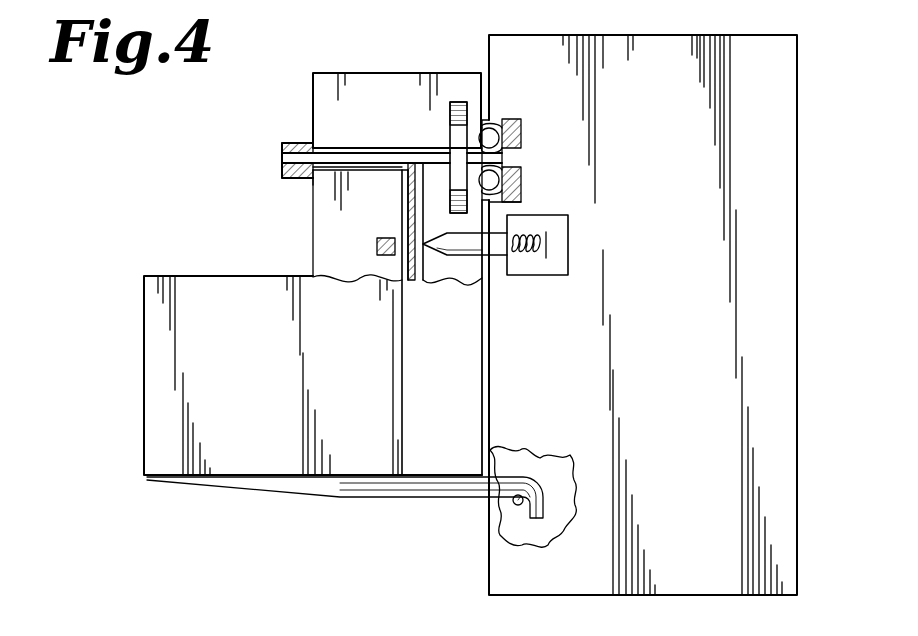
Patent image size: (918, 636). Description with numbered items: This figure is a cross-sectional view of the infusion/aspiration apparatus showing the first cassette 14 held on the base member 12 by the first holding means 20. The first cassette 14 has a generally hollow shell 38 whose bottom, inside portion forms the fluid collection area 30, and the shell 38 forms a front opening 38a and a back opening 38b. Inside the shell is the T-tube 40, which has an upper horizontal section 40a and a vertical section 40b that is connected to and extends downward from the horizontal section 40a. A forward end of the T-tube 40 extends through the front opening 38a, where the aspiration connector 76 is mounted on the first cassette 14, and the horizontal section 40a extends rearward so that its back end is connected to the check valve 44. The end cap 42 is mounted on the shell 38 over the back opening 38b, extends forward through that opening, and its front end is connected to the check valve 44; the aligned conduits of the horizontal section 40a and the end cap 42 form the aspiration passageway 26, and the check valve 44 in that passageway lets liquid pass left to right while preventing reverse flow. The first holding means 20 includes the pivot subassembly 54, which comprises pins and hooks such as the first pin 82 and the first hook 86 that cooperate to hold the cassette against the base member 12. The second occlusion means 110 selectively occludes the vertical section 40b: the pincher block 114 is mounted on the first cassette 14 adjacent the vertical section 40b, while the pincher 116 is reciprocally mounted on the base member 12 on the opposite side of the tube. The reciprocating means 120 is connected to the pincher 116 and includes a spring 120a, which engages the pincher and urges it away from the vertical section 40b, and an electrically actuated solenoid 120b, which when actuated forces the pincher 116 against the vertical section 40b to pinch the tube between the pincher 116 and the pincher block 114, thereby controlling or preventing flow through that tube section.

The base member 12 is at (787, 107).
The first cassette 14 is at (200, 222).
The first holding means 20 is at (410, 552).
The aspiration passageway 26 is at (335, 143).
The fluid collection area 30 is at (392, 447).
The shell 38 is at (144, 327).
The front opening 38a is at (316, 178).
The back opening 38b is at (492, 126).
The T-tube 40 is at (392, 186).
The upper horizontal section 40a is at (412, 150).
The vertical section 40b is at (400, 258).
The end cap 42 is at (518, 188).
The check valve 44 is at (458, 102).
The pivot subassembly 54 is at (548, 482).
The aspiration connector 76 is at (297, 140).
The first pin 82 is at (512, 503).
The first hook 86 is at (495, 482).
The second occlusion means 110 is at (507, 322).
The pincher block 114 is at (377, 247).
The pincher 116 is at (458, 249).
The reciprocating means 120 is at (563, 200).
The spring 120a is at (546, 255).
The solenoid 120b is at (568, 223).